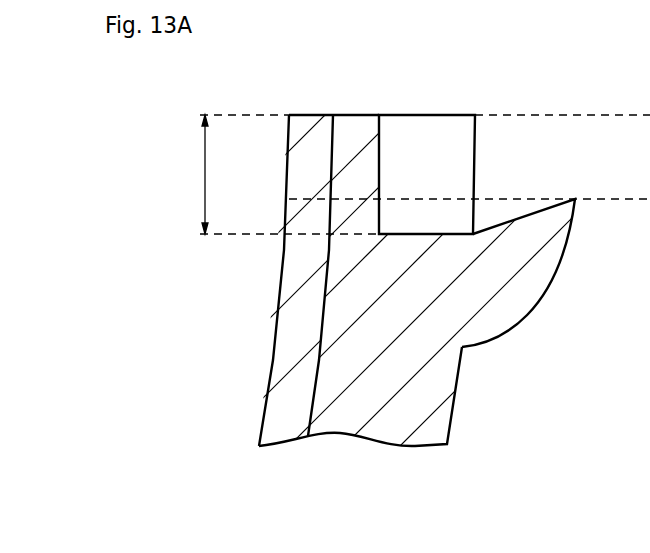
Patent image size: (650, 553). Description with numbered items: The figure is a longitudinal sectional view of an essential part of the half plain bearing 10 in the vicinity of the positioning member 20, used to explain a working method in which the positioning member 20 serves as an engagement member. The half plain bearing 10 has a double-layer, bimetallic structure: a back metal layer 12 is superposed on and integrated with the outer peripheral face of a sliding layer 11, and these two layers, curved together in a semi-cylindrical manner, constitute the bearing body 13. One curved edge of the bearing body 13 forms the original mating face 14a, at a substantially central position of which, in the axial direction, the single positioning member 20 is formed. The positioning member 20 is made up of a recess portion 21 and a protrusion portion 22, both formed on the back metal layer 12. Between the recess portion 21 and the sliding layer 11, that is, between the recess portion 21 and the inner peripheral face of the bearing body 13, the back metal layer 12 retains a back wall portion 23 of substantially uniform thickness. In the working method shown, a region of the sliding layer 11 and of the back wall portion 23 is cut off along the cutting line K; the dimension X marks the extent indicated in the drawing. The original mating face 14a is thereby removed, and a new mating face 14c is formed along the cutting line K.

The half plain bearing 10 is at (292, 50).
The sliding layer 11 is at (283, 436).
The back metal layer 12 is at (325, 430).
The bearing body 13 is at (268, 504).
The mating face 14a is at (305, 115).
The new mating face 14c is at (303, 199).
The positioning member 20 is at (527, 93).
The recess portion 21 is at (382, 138).
The protrusion portion 22 is at (550, 287).
The back wall portion 23 is at (352, 115).
The cutting depth X is at (195, 174).
The cutting line K is at (358, 198).